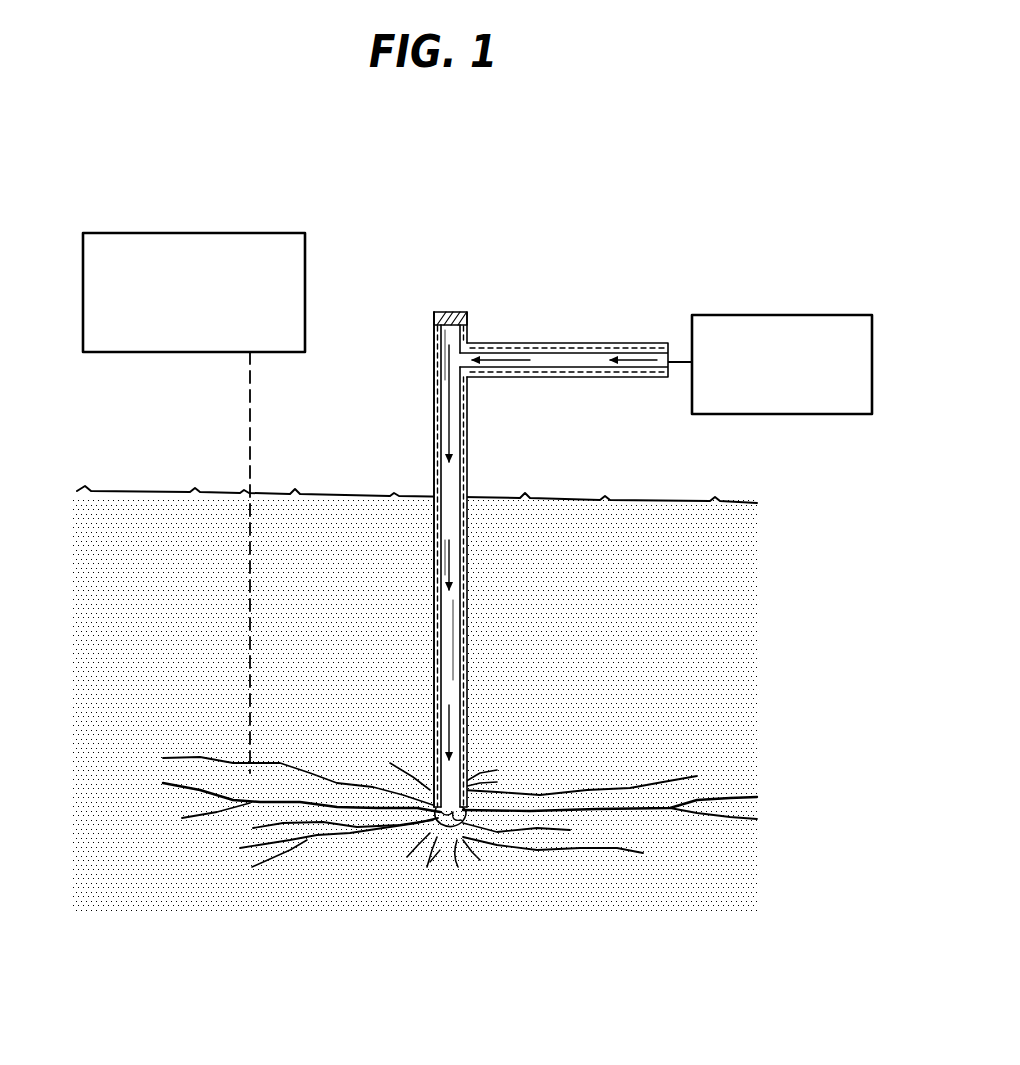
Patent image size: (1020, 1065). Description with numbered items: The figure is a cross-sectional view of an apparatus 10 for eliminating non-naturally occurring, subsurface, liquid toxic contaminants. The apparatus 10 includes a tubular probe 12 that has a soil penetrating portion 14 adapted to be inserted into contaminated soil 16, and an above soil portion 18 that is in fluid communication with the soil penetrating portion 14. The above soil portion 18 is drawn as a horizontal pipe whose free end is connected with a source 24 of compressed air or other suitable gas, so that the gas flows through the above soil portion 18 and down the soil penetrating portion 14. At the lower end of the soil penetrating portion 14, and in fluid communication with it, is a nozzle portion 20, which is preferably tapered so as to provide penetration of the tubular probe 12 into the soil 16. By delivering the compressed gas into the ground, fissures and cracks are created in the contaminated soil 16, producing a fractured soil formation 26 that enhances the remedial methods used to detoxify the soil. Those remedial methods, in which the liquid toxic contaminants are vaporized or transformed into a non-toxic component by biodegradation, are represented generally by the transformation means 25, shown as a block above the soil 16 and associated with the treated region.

The apparatus 10 is at (420, 375).
The tubular probe 12 is at (468, 540).
The soil penetrating portion 14 is at (433, 520).
The contaminated soil 16 is at (195, 506).
The above soil portion 18 is at (527, 343).
The nozzle portion 20 is at (445, 818).
The source of compressed air 24 is at (772, 315).
The transformation means 25 is at (258, 198).
The fractured soil formation 26 is at (617, 828).